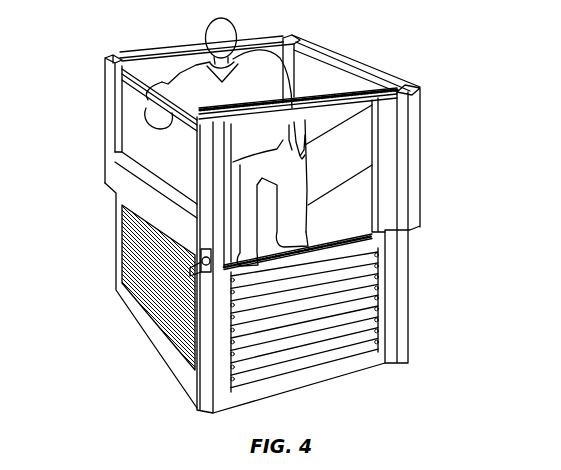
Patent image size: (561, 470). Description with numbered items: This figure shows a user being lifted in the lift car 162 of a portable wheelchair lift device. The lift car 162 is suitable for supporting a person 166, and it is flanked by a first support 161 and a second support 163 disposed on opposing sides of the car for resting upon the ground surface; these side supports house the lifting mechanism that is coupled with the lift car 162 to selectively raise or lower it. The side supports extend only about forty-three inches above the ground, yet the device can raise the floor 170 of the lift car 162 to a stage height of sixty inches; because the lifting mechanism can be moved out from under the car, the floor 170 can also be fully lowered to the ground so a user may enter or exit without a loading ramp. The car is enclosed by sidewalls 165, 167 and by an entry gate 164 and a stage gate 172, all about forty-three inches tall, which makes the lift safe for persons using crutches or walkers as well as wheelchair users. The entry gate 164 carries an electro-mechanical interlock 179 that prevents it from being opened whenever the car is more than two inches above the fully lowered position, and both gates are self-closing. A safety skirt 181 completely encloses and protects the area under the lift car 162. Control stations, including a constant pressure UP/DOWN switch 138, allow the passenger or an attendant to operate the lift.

The UP/DOWN switch 138 is at (184, 262).
The first support 161 is at (403, 338).
The lift car 162 is at (234, 209).
The second support 163 is at (200, 391).
The entry gate 164 is at (327, 100).
The sidewall 165 is at (307, 78).
The person 166 is at (246, 58).
The sidewall 167 is at (132, 139).
The floor 170 is at (337, 228).
The stage gate 172 is at (153, 63).
The electro-mechanical interlock 179 is at (378, 288).
The safety skirt 181 is at (198, 261).